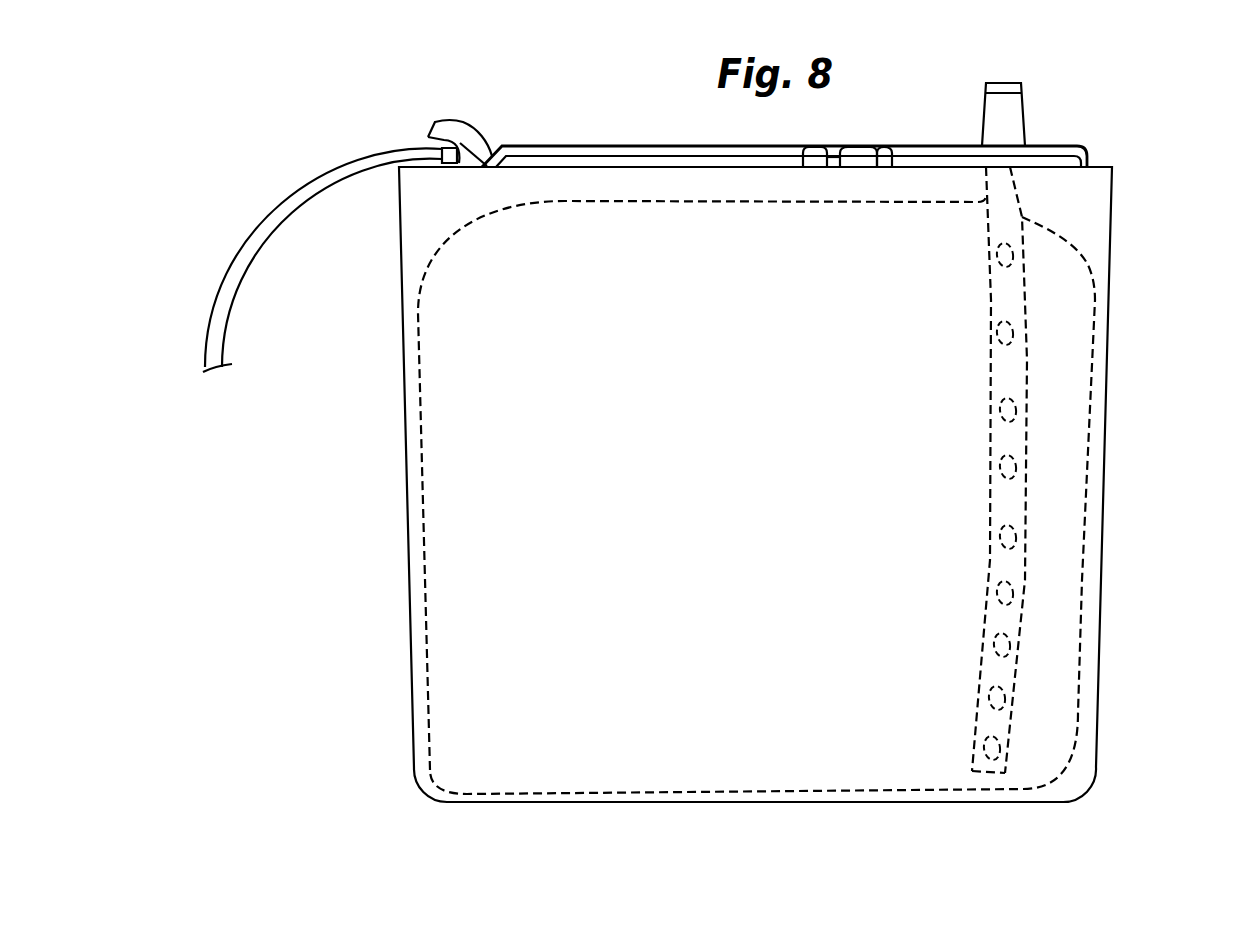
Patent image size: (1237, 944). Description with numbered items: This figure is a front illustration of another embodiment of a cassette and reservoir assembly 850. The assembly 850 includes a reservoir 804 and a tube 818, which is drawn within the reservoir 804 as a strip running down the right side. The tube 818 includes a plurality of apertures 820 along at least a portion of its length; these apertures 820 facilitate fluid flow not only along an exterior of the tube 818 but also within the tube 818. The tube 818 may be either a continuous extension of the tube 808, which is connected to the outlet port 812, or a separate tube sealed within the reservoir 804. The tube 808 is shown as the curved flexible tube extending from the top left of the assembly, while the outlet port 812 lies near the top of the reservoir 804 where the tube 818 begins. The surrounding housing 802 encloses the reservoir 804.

The container body 802 is at (1110, 247).
The reservoir 804 is at (1097, 305).
The tube 808 is at (327, 163).
The outlet port 812 is at (1003, 182).
The tube 818 is at (1028, 443).
The apertures 820 is at (1015, 542).
The cassette and reservoir assembly 850 is at (766, 849).